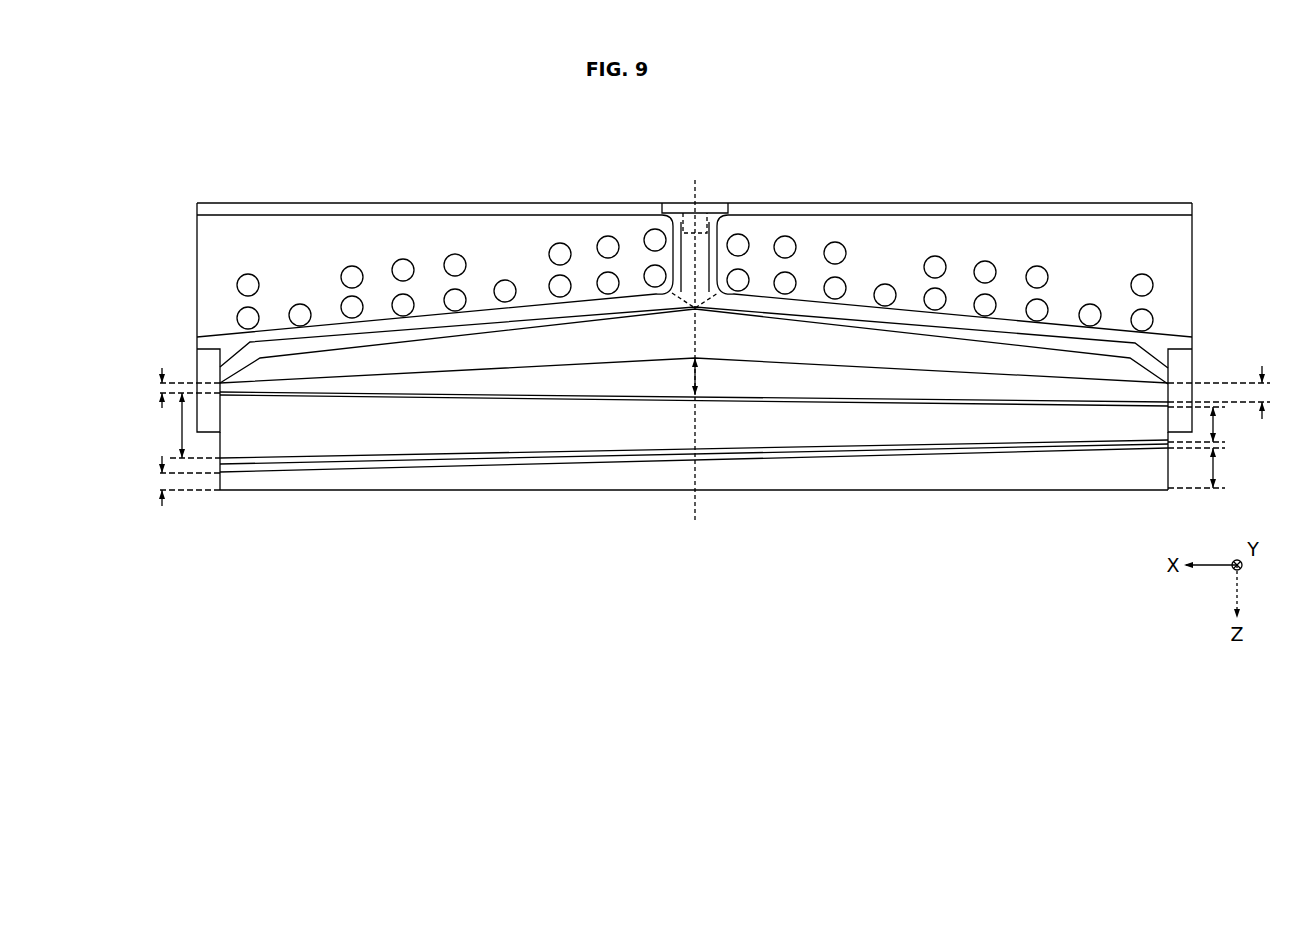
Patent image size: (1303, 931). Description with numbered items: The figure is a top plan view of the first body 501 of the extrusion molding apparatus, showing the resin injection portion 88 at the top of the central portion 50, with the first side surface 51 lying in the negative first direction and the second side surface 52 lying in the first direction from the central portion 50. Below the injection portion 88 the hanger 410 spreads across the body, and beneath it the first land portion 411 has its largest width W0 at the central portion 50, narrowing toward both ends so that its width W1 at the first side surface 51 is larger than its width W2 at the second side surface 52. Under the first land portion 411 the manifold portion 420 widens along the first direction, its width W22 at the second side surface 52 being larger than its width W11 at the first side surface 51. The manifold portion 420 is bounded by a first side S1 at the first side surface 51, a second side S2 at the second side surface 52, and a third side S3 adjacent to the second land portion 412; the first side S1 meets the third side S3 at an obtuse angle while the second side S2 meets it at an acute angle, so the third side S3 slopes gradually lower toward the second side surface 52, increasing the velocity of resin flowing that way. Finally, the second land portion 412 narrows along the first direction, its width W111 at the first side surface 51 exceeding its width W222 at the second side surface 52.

The first body 501 is at (790, 176).
The central portion 50 is at (702, 181).
The resin injection portion 88 is at (695, 262).
The second side surface 52 is at (197, 273).
The first side surface 51 is at (1192, 273).
The hanger 410 is at (571, 345).
The first land portion 411 is at (650, 375).
The manifold portion 420 is at (720, 428).
The second land portion 412 is at (795, 478).
The first side S1 is at (1168, 415).
The second side S2 is at (220, 415).
The third side S3 is at (970, 442).
The width of the first land portion at the central portion W0 is at (711, 376).
The width of the first land portion at the first side surface W1 is at (1233, 392).
The width of the manifold portion at the first side surface W11 is at (1214, 424).
The width of the second land portion at the first side surface W111 is at (1220, 468).
The width of the first land portion at the second side surface W2 is at (170, 388).
The width of the manifold portion at the second side surface W22 is at (172, 425).
The width of the second land portion at the second side surface W222 is at (152, 481).